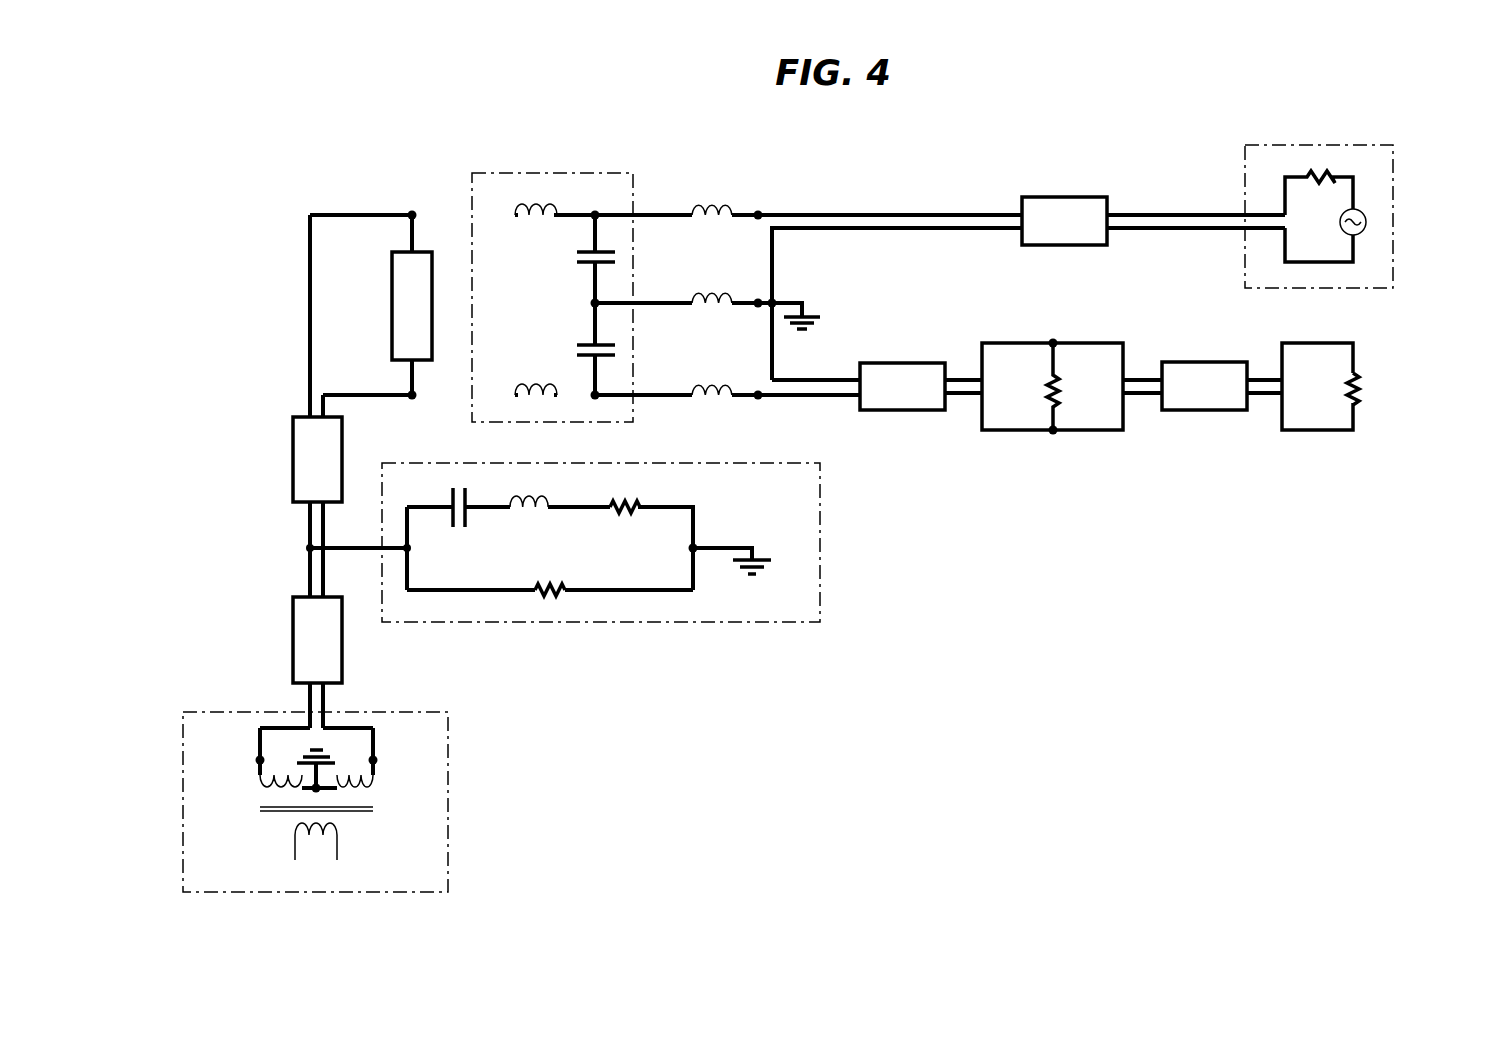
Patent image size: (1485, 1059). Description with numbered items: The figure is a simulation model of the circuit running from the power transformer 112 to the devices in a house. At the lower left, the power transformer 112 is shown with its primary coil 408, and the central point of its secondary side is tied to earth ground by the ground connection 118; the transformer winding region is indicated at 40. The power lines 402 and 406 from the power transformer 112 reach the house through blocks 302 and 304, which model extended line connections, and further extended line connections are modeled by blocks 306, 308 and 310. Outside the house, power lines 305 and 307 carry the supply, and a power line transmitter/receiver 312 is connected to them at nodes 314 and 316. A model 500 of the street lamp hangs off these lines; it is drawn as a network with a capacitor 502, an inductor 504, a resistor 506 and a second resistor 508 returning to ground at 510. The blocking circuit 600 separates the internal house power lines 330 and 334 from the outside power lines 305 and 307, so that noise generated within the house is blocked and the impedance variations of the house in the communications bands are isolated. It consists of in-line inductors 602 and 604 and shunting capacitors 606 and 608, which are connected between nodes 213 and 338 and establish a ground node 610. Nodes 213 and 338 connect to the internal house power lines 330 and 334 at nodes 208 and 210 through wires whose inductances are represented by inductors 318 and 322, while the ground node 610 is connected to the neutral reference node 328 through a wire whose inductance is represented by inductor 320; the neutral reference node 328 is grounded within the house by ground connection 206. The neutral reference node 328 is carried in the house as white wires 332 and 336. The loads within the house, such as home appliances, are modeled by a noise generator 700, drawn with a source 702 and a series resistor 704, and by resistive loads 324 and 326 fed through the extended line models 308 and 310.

The transformer primary winding 40 is at (285, 753).
The power transformer 112 is at (448, 797).
The ground connection 118 is at (330, 755).
The ground connection 206 is at (803, 303).
The node 208 is at (762, 213).
The node 210 is at (757, 399).
The node 213 is at (598, 210).
The block 302 is at (290, 645).
The block 304 is at (290, 465).
The power line 305 is at (345, 213).
The block 306 is at (1065, 197).
The power line 307 is at (368, 393).
The block 308 is at (910, 410).
The block 310 is at (1205, 362).
The power line transmitter/receiver 312 is at (390, 310).
The node 314 is at (412, 213).
The node 316 is at (412, 398).
The inductor 318 is at (720, 205).
The inductor 320 is at (710, 290).
The inductor 322 is at (705, 390).
The resistive load 324 is at (1060, 375).
The resistive load 326 is at (1360, 385).
The neutral reference node 328 is at (755, 308).
The power line 330 is at (912, 213).
The white wire 332 is at (888, 229).
The power line 334 is at (830, 397).
The white wire 336 is at (815, 380).
The node 338 is at (600, 397).
The power line 402 is at (258, 760).
The power line 406 is at (375, 760).
The primary coil 408 is at (288, 832).
The model 500 is at (822, 548).
The capacitor 502 is at (460, 500).
The inductor 504 is at (545, 505).
The resistor 506 is at (625, 505).
The resistor 508 is at (552, 595).
The ground 510 is at (760, 548).
The blocking circuit 600 is at (492, 173).
The in-line inductor 602 is at (543, 205).
The in-line inductor 604 is at (530, 390).
The shunting capacitor 606 is at (575, 257).
The shunting capacitor 608 is at (578, 345).
The ground node 610 is at (593, 303).
The noise generator 700 is at (1270, 145).
The AC source 702 is at (1368, 222).
The source resistor 704 is at (1325, 177).